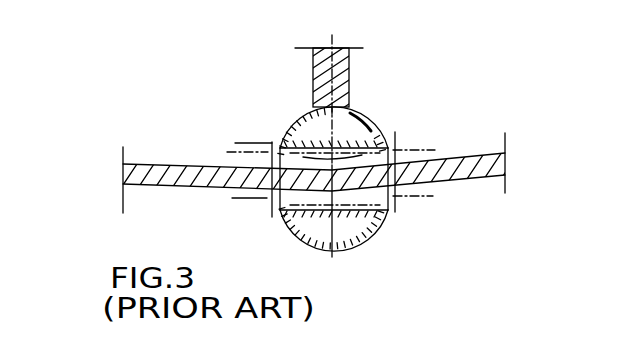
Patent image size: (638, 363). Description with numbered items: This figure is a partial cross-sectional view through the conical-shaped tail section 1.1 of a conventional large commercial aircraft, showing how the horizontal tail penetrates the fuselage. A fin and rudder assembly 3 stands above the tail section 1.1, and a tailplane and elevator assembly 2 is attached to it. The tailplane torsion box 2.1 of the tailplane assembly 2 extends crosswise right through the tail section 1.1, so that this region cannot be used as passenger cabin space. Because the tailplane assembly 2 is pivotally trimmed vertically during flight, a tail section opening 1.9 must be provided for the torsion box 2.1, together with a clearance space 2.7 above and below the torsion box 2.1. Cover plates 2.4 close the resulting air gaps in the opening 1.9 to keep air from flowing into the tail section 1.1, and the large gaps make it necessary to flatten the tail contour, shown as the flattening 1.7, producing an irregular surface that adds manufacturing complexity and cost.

The tail section 1.1 is at (205, 55).
The fin and rudder assembly 3 is at (341, 77).
The tailplane and elevator assembly 2 is at (84, 168).
The tailplane torsion box 2.1 is at (163, 170).
The cover plates 2.4 is at (272, 217).
The flattening 1.7 is at (401, 256).
The tail section opening 1.9 is at (303, 220).
The clearance space 2.7 is at (433, 150).